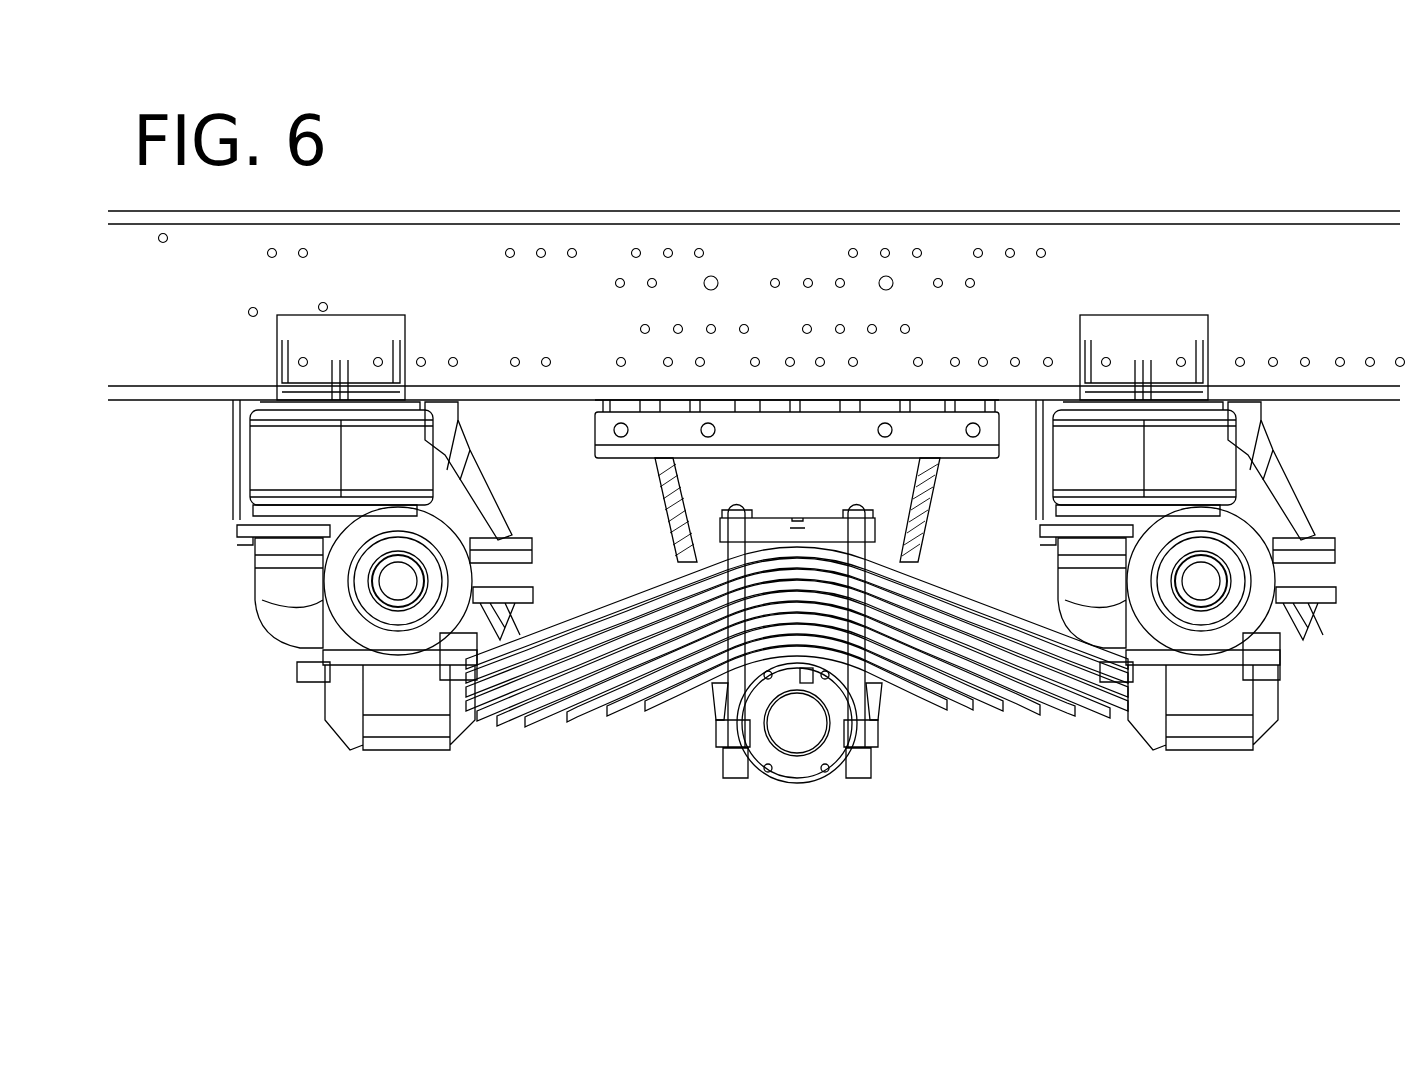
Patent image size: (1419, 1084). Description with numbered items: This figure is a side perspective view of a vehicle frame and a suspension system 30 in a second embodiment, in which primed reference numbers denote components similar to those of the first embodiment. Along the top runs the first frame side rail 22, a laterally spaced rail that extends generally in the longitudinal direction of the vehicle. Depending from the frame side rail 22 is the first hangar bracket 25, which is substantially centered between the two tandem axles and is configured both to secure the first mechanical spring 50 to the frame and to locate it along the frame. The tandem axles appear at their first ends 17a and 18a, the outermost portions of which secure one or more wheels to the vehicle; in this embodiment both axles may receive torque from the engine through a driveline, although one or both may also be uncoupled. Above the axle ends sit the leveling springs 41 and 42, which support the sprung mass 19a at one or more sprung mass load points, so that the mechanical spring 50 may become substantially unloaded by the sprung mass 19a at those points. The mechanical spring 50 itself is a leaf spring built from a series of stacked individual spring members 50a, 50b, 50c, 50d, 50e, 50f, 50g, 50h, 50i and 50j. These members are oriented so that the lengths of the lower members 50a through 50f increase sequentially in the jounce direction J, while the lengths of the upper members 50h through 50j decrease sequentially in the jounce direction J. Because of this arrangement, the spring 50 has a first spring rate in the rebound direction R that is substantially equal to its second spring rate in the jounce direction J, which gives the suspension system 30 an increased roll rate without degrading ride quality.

The first end of the first tandem axle 17a is at (399, 581).
The first end of the second tandem axle 18a is at (1205, 583).
The sprung mass 19a is at (1335, 352).
The first frame side rail 22 is at (1092, 290).
The first hangar bracket 25 is at (795, 483).
The suspension system 30 is at (556, 526).
The leveling spring 41 is at (312, 470).
The leveling spring 42 is at (1160, 440).
The first mechanical spring 50 is at (891, 686).
The individual spring member 50a is at (945, 703).
The individual spring member 50b is at (972, 703).
The individual spring member 50c is at (1003, 703).
The individual spring member 50d is at (1040, 697).
The individual spring member 50e is at (1075, 690).
The individual spring member 50f is at (1108, 680).
The individual spring member 50g is at (1118, 663).
The individual spring member 50h is at (1093, 657).
The individual spring member 50i is at (1057, 637).
The individual spring member 50j is at (982, 600).
The rebound direction R is at (141, 585).
The jounce direction J is at (1388, 607).